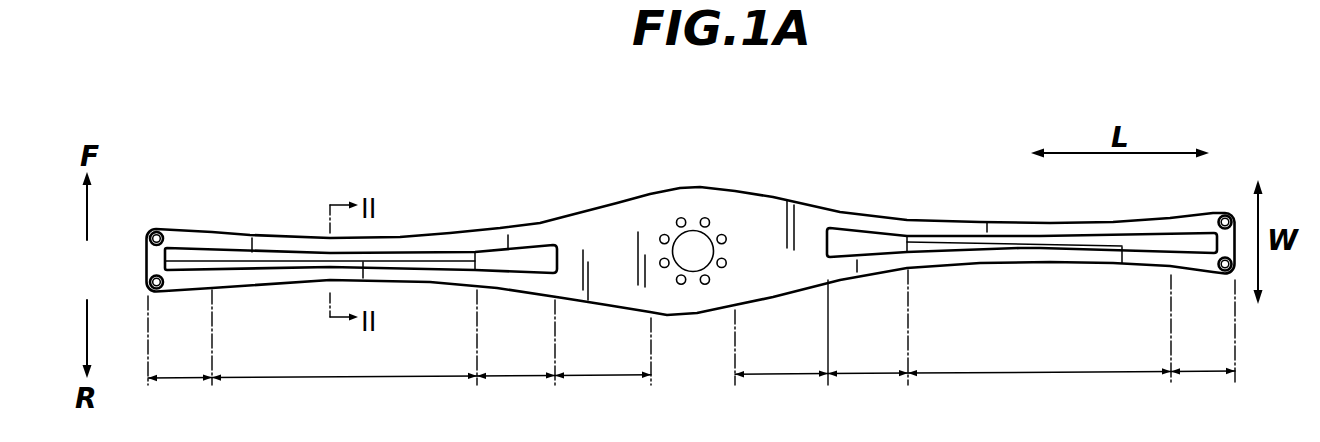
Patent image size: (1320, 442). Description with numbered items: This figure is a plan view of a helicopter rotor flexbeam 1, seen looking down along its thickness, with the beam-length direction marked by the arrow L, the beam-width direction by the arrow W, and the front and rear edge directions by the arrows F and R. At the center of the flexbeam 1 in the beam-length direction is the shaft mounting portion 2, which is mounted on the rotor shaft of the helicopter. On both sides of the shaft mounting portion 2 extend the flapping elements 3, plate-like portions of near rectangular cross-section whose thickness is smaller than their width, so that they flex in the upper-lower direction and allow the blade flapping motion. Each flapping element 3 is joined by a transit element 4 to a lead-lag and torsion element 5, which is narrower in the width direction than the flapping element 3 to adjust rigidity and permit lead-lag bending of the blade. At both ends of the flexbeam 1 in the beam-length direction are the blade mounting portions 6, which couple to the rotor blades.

The flexbeam 1 is at (830, 148).
The shaft mounting portion 2 is at (690, 295).
The flapping element 3 is at (691, 391).
The transit element 4 is at (692, 392).
The lead-lag and torsion element 5 is at (691, 391).
The blade mounting portion 6 is at (691, 391).